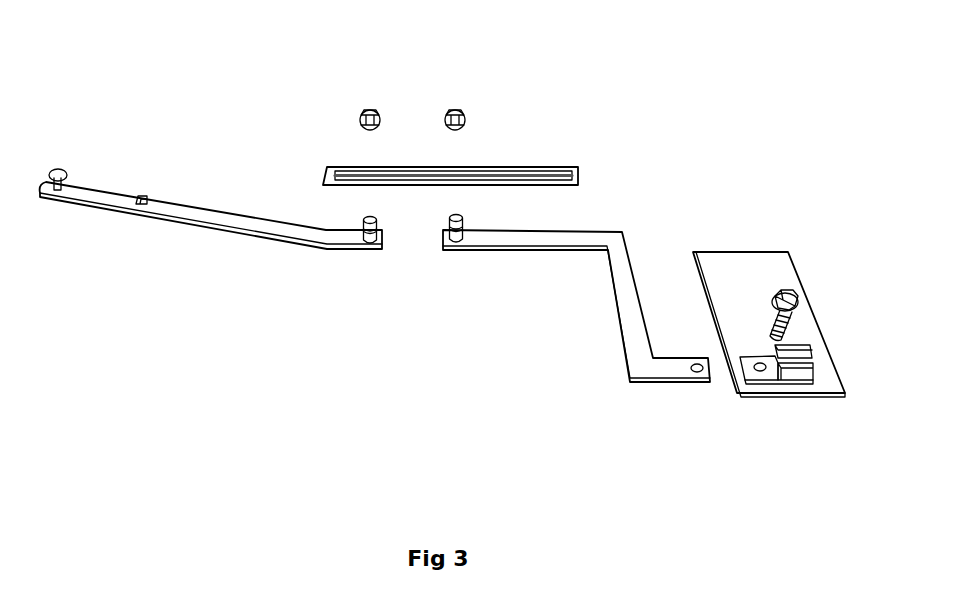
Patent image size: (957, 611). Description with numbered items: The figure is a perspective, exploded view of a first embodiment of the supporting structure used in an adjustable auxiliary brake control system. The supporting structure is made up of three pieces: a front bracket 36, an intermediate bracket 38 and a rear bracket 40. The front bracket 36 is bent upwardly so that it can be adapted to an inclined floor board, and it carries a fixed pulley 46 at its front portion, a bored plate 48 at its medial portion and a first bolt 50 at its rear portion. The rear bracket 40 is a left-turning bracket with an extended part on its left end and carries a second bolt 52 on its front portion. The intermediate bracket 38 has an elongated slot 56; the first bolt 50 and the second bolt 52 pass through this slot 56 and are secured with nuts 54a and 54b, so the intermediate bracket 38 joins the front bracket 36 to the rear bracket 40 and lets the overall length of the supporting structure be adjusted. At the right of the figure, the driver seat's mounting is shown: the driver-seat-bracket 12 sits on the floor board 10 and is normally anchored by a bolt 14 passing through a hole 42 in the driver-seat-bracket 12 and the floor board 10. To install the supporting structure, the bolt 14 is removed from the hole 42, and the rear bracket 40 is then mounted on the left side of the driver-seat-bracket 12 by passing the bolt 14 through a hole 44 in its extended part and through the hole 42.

The floor board 10 is at (748, 277).
The driver-seat-bracket 12 is at (814, 359).
The bolt 14 is at (792, 295).
The front bracket 36 is at (236, 214).
The intermediate bracket 38 is at (481, 96).
The rear bracket 40 is at (577, 297).
The hole 42 is at (762, 372).
The hole 44 is at (697, 374).
The fixed pulley 46 is at (57, 169).
The bored plate 48 is at (142, 196).
The first bolt 50 is at (370, 244).
The second bolt 52 is at (455, 243).
The nut 54a is at (363, 111).
The nut 54b is at (452, 111).
The slot 56 is at (512, 176).